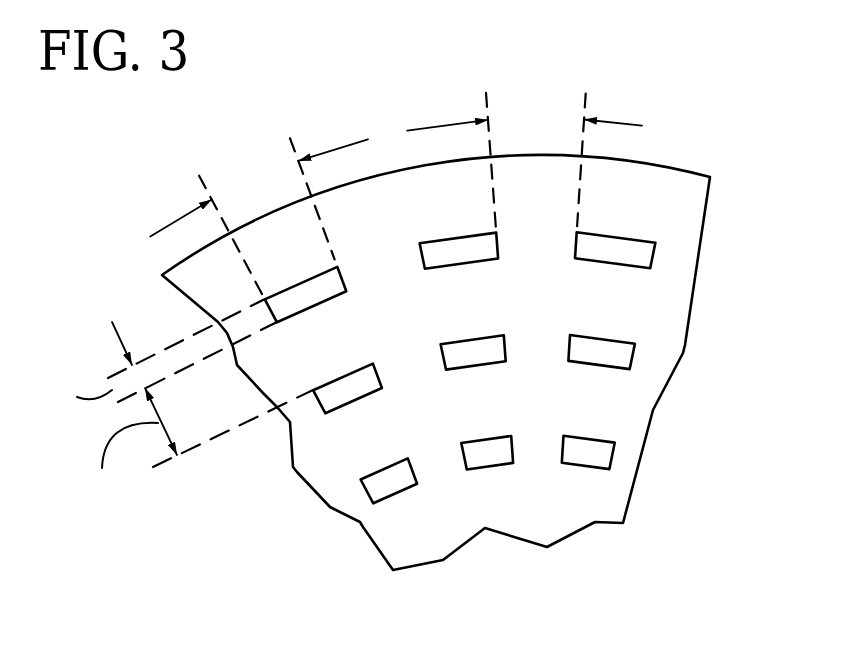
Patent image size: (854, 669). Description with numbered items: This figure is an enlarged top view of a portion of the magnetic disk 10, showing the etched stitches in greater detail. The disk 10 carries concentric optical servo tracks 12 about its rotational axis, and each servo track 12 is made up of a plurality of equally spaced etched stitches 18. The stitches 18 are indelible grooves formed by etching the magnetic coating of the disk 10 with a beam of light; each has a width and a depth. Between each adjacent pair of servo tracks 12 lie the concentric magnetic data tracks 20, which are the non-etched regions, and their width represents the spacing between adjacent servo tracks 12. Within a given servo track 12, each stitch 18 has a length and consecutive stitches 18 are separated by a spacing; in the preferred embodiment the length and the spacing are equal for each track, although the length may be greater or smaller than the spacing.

The magnetic disk 10 is at (162, 275).
The optical servo track 12 is at (365, 268).
The etched stitch 18 is at (483, 343).
The magnetic data track 20 is at (625, 203).